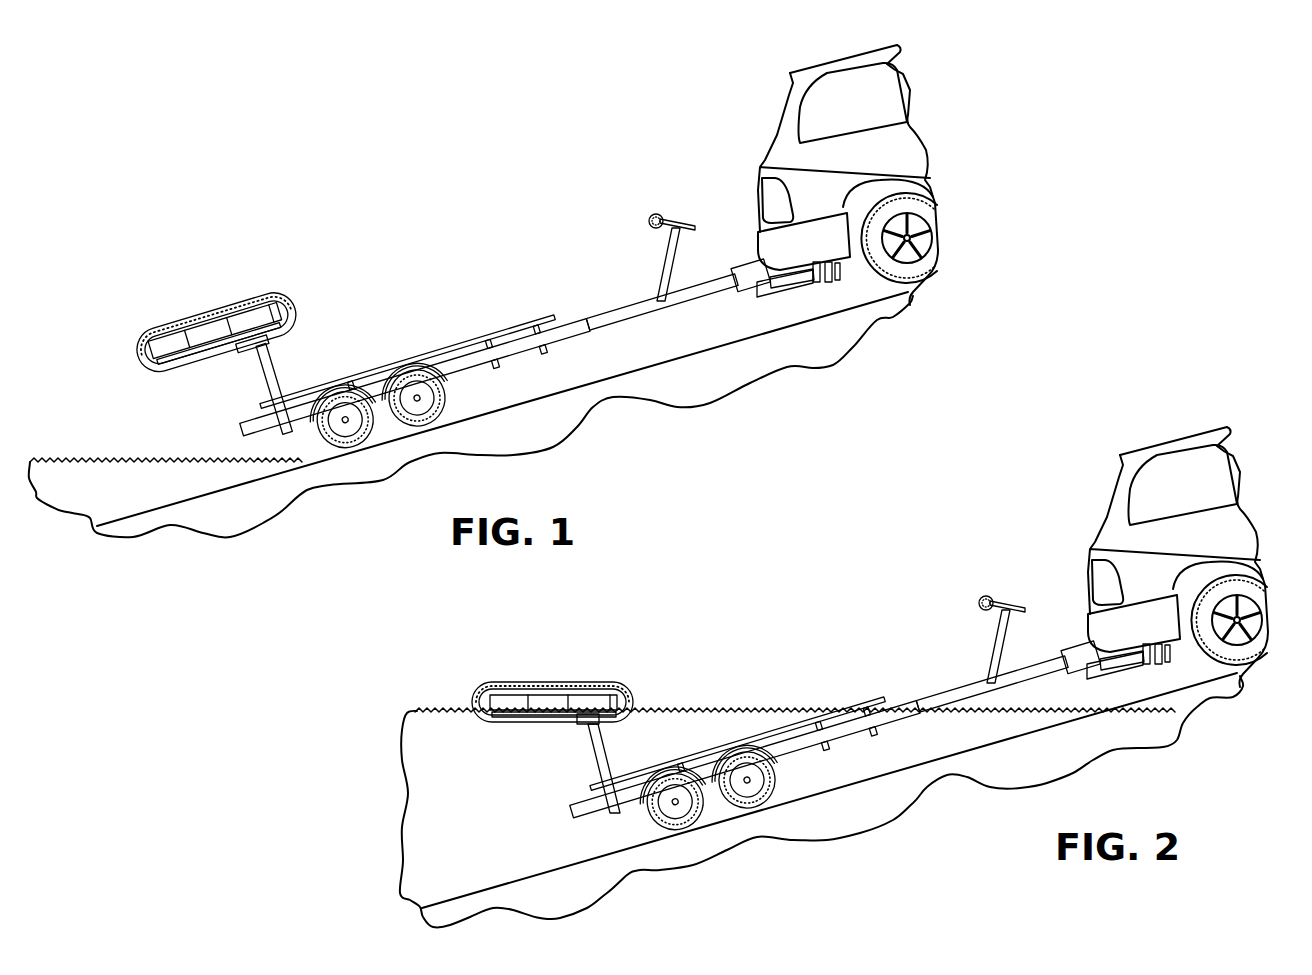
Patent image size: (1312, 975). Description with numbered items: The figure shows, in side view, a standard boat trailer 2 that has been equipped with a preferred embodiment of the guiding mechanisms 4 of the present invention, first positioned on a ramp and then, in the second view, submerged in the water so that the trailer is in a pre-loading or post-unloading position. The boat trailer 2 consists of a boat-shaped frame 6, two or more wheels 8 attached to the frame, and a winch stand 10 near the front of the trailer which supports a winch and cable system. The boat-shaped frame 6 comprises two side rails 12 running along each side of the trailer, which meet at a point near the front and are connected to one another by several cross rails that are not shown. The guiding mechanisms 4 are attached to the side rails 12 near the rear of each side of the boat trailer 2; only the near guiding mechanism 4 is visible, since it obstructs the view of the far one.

In FIG. 1, the boat trailer 2 is at (440, 333).
In FIG. 2, the boat trailer 2 is at (772, 711).
In FIG. 1, the guiding mechanism 4 is at (200, 295).
In FIG. 2, the guiding mechanism 4 is at (528, 748).
In FIG. 1, the boat-shaped frame 6 is at (612, 303).
In FIG. 2, the boat-shaped frame 6 is at (940, 680).
In FIG. 1, the wheels 8 is at (392, 437).
In FIG. 2, the wheels 8 is at (722, 820).
In FIG. 1, the winch stand 10 is at (681, 267).
In FIG. 2, the winch stand 10 is at (1012, 650).
In FIG. 1, the side rails 12 is at (520, 358).
In FIG. 2, the side rails 12 is at (852, 738).